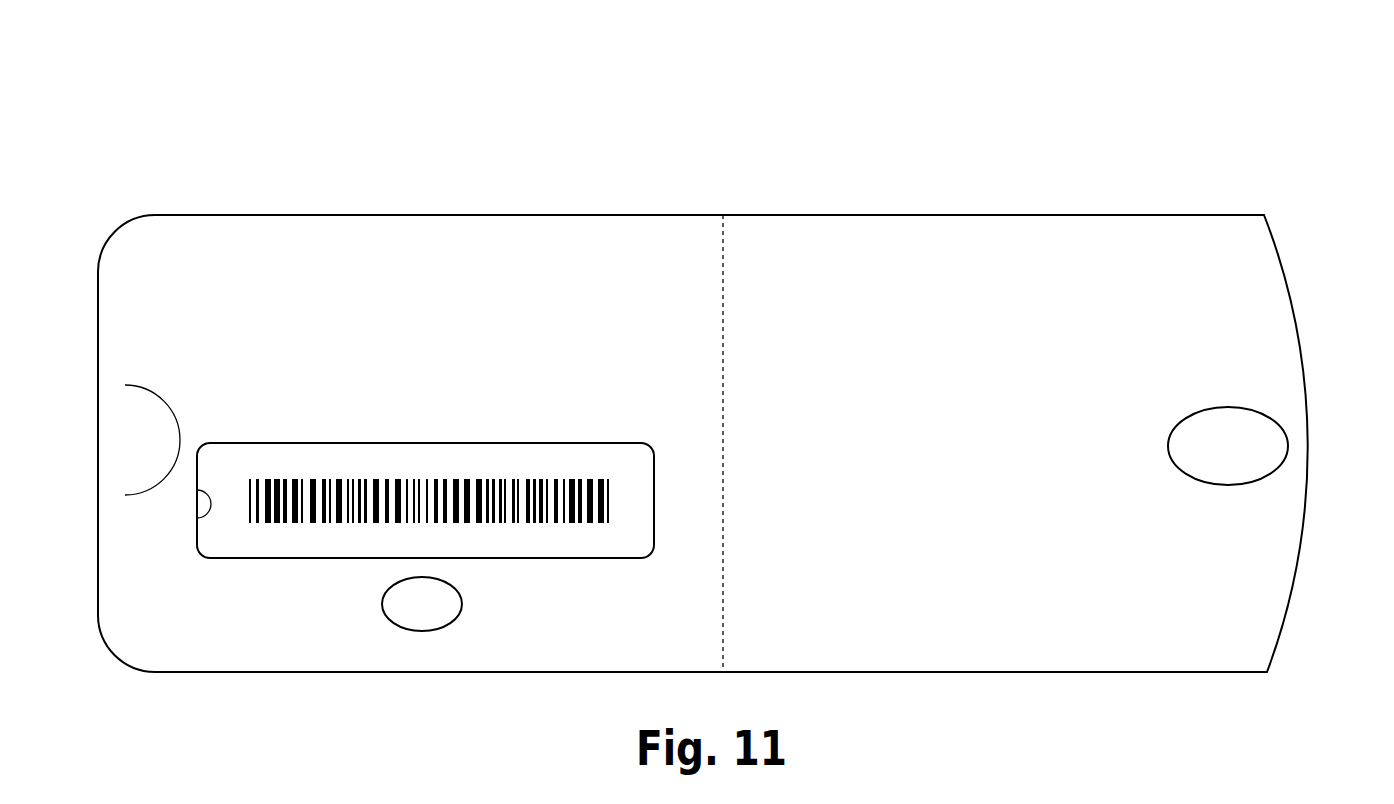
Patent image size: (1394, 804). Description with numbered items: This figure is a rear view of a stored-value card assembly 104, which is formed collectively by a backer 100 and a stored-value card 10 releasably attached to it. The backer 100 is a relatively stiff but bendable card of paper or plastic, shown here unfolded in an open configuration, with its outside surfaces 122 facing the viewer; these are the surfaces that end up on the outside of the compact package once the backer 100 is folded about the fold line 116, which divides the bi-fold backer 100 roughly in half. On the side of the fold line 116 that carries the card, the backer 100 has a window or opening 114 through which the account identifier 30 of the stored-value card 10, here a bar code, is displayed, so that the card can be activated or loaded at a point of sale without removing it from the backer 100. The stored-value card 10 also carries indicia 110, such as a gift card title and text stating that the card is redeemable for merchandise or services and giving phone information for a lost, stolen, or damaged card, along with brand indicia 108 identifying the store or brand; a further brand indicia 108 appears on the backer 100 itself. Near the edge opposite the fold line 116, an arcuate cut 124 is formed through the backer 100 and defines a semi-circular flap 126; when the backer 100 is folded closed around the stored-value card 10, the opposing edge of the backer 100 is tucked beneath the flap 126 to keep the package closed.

The stored-value card 10 is at (227, 540).
The account identifier 30 is at (300, 522).
The backer 100 is at (1097, 188).
The stored-value card assembly 104 is at (1199, 102).
The brand indicia 108 is at (455, 615).
The indicia 110 is at (505, 252).
The opening 114 is at (197, 518).
The fold line 116 is at (725, 247).
The outside surfaces 122 is at (1043, 645).
The cut 124 is at (143, 492).
The flap 126 is at (163, 432).